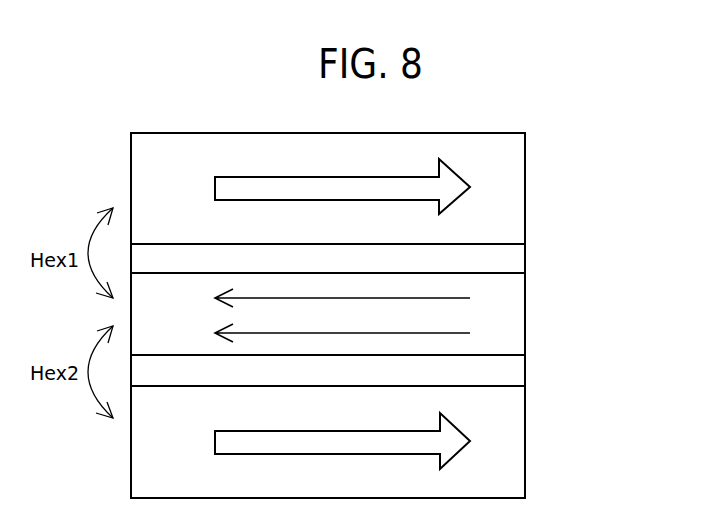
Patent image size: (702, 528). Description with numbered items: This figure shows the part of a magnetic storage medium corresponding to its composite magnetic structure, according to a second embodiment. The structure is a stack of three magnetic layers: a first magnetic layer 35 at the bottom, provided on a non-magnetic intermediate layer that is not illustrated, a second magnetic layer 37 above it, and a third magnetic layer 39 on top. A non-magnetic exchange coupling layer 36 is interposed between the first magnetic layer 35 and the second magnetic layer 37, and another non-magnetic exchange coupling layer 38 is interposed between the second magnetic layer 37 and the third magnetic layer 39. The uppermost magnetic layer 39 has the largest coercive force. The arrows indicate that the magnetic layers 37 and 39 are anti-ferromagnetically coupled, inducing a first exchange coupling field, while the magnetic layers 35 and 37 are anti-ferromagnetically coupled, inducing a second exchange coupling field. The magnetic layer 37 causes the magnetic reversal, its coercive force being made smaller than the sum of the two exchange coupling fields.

The first magnetic layer 35 is at (515, 443).
The non-magnetic exchange coupling layer 36 is at (515, 375).
The second magnetic layer 37 is at (515, 311).
The non-magnetic exchange coupling layer 38 is at (515, 258).
The third magnetic layer 39 is at (515, 190).